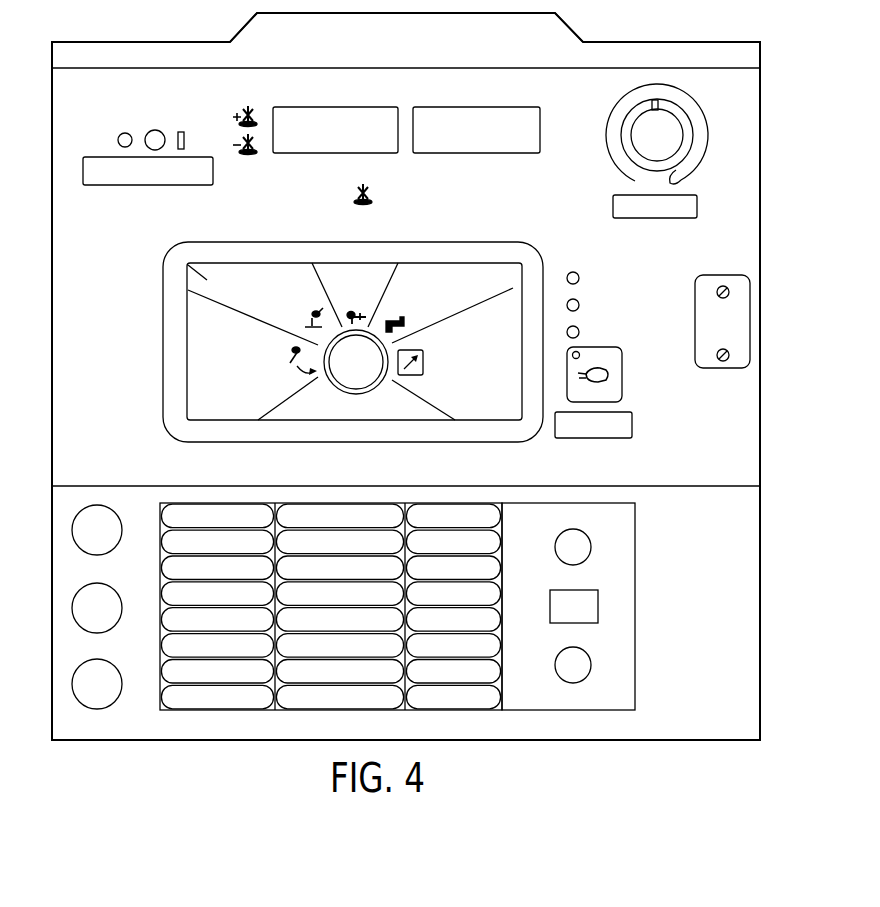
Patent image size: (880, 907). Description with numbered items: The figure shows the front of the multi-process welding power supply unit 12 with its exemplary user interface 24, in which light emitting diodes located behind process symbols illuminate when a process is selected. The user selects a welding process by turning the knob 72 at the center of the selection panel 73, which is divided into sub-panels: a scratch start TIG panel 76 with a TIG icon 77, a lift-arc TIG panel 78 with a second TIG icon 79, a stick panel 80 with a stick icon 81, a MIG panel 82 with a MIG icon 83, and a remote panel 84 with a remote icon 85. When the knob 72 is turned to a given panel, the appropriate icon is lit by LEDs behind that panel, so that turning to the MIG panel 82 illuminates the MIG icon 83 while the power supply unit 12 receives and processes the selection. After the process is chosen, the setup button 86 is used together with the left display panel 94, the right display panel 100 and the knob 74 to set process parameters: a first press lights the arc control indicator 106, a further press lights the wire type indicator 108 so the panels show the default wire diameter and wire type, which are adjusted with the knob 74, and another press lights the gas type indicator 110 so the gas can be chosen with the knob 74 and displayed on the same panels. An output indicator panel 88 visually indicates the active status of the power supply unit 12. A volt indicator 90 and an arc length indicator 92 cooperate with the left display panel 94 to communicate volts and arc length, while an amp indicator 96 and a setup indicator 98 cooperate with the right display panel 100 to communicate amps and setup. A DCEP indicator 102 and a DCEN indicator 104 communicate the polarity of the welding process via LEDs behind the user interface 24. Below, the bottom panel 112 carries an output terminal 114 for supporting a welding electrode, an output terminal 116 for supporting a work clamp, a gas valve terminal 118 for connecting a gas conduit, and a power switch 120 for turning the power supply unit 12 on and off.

The user interface 24 is at (48, 69).
The power supply unit 12 is at (672, 42).
The knob 74 is at (688, 126).
The DCEP indicator 102 is at (240, 111).
The DCEN indicator 104 is at (252, 138).
The left display panel 94 is at (362, 114).
The right display panel 100 is at (472, 114).
The arc length indicator 92 is at (358, 190).
The amp indicator 96 is at (428, 196).
The setup indicator 98 is at (530, 190).
The volt indicator 90 is at (297, 197).
The output indicator panel 88 is at (90, 186).
The selection panel 73 is at (243, 221).
The lift-arc TIG panel 78 is at (180, 256).
The second TIG icon 79 is at (310, 299).
The stick panel 80 is at (371, 299).
The stick icon 81 is at (406, 299).
The MIG icon 83 is at (440, 262).
The MIG panel 82 is at (472, 282).
The arc control indicator 106 is at (569, 273).
The scratch start TIG panel 76 is at (200, 328).
The wire type indicator 108 is at (567, 308).
The gas type indicator 110 is at (567, 334).
The setup button 86 is at (624, 380).
The knob 72 is at (358, 372).
The TIG icon 77 is at (284, 366).
The remote icon 85 is at (437, 385).
The remote panel 84 is at (475, 398).
The output terminal 114 is at (121, 531).
The gas valve terminal 118 is at (121, 608).
The output terminal 116 is at (121, 684).
The power switch 120 is at (598, 606).
The bottom panel 112 is at (723, 751).